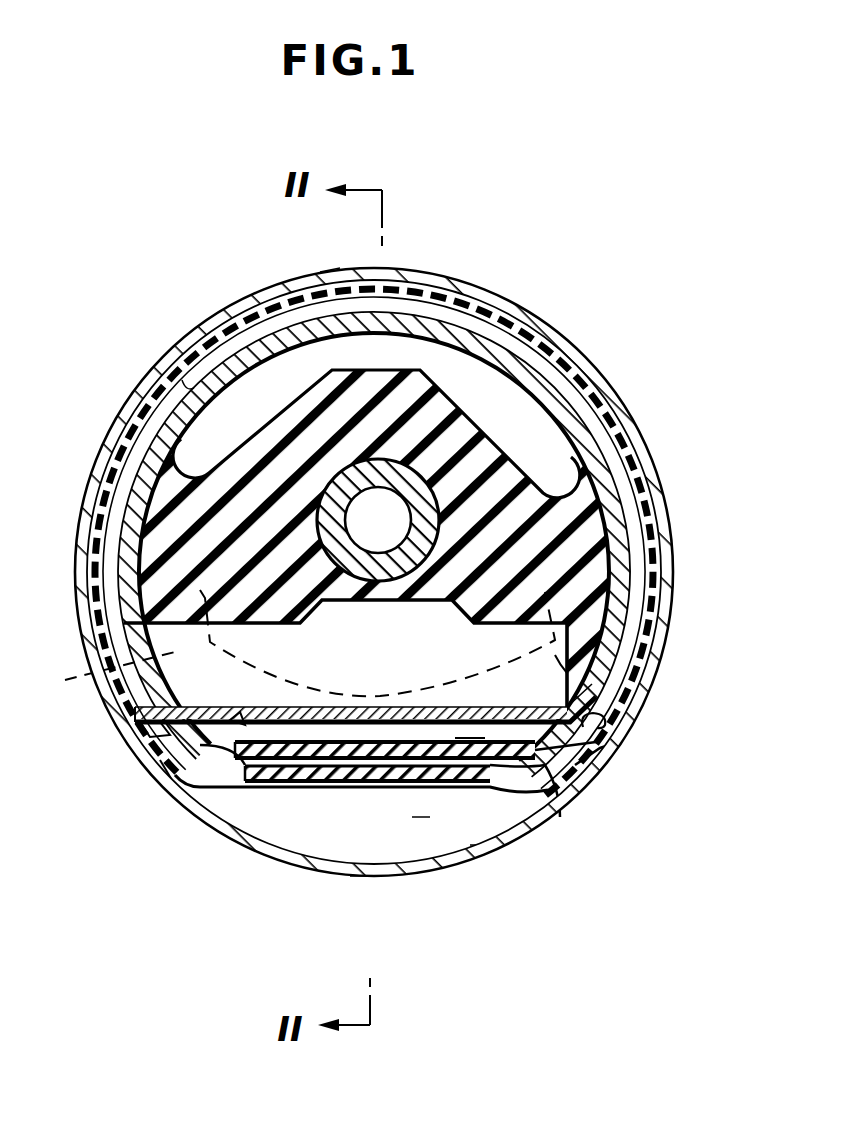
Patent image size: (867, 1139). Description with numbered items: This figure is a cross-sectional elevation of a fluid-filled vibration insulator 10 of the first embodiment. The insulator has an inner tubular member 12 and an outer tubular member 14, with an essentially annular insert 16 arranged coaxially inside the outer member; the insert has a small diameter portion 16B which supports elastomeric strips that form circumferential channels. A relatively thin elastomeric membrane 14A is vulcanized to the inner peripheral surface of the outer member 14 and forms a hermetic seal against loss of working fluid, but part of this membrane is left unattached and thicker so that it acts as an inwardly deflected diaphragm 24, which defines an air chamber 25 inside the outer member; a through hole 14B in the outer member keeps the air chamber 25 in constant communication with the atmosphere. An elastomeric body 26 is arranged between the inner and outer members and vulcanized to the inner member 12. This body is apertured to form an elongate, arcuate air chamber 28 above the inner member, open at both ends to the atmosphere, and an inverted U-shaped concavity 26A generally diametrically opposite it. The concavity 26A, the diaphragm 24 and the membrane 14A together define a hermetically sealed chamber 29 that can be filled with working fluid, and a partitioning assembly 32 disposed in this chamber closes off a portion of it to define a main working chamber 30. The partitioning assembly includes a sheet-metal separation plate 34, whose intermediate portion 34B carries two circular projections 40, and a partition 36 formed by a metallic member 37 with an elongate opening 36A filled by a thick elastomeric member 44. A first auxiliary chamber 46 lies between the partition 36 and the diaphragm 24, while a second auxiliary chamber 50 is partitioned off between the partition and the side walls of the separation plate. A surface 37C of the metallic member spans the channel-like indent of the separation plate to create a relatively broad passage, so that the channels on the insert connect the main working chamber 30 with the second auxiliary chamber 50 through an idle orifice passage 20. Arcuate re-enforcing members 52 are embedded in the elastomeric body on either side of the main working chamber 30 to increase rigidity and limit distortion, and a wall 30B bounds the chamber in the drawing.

The vibration insulator 10 is at (628, 316).
The inner tubular member 12 is at (432, 497).
The outer tubular member 14 is at (513, 313).
The elastomeric membrane 14A is at (188, 384).
The through hole 14B is at (358, 878).
The annular insert 16 is at (652, 570).
The small diameter portion 16B is at (622, 447).
The idle orifice passage 20 is at (330, 268).
The diaphragm 24 is at (478, 845).
The air chamber 25 is at (420, 817).
The elastomeric body 26 is at (612, 520).
The inverted U-shaped concavity 26A is at (570, 672).
The elongate arcuate air chamber 28 is at (250, 393).
The hermetically sealed chamber 29 is at (290, 640).
The main working chamber 30 is at (345, 654).
The chamber side wall 30B is at (148, 735).
The partitioning assembly 32 is at (548, 702).
The separation plate 34 is at (471, 698).
The intermediate portion 34B is at (237, 705).
The partition 36 is at (590, 787).
The elongate opening 36A is at (223, 797).
The metallic member 37 is at (610, 747).
The adjacent surface 37C is at (612, 718).
The circular cross-sectional projections 40 is at (157, 775).
The elastomeric member 44 is at (283, 768).
The first auxiliary chamber 46 is at (170, 786).
The second auxiliary chamber 50 is at (472, 738).
The arcuate re-enforcing members 52 is at (103, 673).